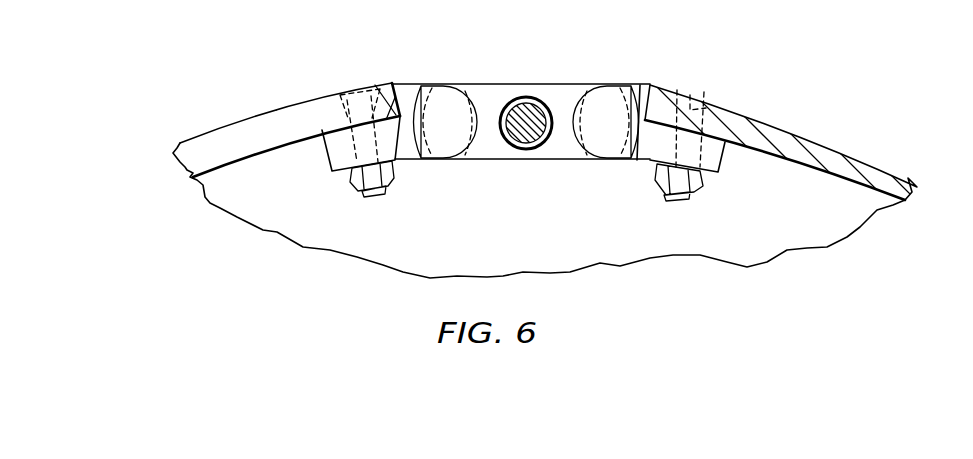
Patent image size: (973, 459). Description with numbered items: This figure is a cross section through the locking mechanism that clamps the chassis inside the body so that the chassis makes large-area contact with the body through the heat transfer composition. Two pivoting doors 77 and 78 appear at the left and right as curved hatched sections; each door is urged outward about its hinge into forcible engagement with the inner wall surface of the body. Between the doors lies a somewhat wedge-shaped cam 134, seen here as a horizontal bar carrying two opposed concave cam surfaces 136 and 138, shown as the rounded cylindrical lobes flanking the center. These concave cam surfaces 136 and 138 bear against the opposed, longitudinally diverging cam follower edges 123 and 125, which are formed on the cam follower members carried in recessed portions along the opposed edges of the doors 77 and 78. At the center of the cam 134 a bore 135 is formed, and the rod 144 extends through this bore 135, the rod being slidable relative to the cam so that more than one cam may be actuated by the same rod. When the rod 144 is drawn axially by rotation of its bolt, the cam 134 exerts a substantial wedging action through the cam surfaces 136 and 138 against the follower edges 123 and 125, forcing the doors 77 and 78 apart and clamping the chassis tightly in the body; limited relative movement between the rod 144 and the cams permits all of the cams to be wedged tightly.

The door 77 is at (781, 114).
The door 78 is at (257, 113).
The cam follower edge 123 is at (569, 151).
The cam follower edge 125 is at (470, 156).
The cam 134 is at (508, 84).
The bore 135 is at (545, 100).
The concave cam surface 136 is at (590, 86).
The concave cam surface 138 is at (462, 86).
The rod 144 is at (528, 132).